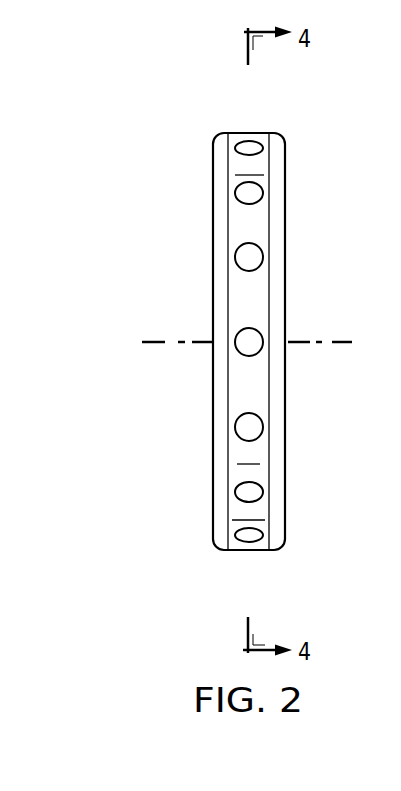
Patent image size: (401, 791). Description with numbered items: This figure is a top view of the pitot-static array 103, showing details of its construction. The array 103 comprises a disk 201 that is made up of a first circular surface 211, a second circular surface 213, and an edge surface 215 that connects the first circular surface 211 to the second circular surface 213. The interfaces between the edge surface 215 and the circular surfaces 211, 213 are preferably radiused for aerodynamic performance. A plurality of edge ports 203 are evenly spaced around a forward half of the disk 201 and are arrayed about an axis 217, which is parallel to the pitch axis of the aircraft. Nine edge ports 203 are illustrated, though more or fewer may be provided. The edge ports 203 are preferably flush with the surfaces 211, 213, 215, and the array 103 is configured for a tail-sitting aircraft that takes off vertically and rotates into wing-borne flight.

The pitot-static array 103 is at (144, 596).
The disk 201 is at (290, 552).
The edge ports 203 is at (248, 143).
The first circular surface 211 is at (213, 400).
The second circular surface 213 is at (285, 368).
The edge surface 215 is at (255, 400).
The axis 217 is at (152, 340).